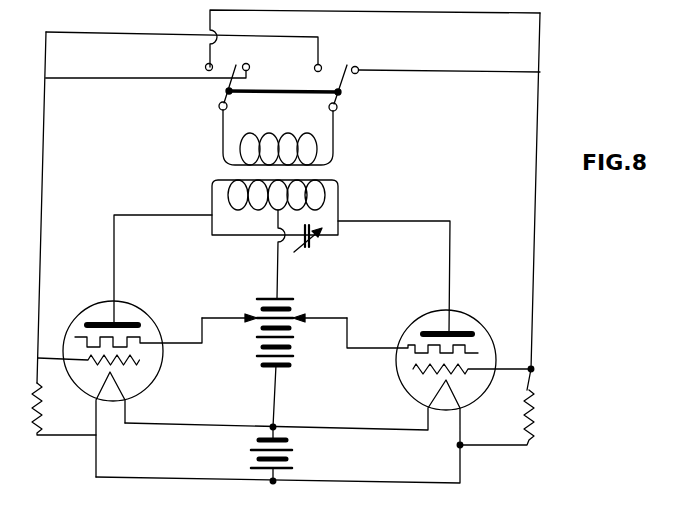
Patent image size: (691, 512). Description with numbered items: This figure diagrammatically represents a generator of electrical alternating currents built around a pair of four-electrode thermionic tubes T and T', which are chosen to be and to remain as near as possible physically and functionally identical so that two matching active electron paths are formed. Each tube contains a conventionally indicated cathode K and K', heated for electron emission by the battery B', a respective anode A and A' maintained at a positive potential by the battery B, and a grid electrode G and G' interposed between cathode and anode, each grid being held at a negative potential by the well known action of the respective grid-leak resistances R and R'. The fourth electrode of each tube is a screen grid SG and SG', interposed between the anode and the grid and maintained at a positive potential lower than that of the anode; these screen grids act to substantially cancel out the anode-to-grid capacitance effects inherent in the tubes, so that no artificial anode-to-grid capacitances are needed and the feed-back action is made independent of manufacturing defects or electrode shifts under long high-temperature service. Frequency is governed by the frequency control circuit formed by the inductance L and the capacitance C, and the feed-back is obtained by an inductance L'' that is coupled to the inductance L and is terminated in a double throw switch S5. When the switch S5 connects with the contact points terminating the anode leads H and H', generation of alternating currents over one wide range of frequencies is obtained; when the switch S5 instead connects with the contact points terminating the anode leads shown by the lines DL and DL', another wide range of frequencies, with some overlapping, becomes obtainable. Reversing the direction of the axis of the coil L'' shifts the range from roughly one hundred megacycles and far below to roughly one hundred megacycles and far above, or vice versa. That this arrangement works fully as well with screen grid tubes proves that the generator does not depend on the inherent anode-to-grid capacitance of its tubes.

The anode lead H is at (373, 40).
The anode lead H' is at (184, 42).
The anode lead DL is at (446, 201).
The anode lead DL' is at (143, 207).
The double throw switch S5 is at (283, 93).
The inductance L'' is at (294, 137).
The inductance L is at (282, 257).
The capacitance C is at (312, 245).
The battery B is at (274, 363).
The battery B' is at (284, 454).
The thermionic tube T is at (450, 355).
The thermionic tube T' is at (113, 345).
The anode A is at (432, 307).
The anode A' is at (121, 300).
The screen grid SG is at (412, 333).
The screen grid SG' is at (138, 327).
The grid electrode G is at (454, 377).
The grid electrode G' is at (110, 370).
The cathode K is at (279, 431).
The cathode K' is at (129, 424).
The grid-leak resistance R is at (511, 417).
The grid-leak resistance R' is at (49, 409).